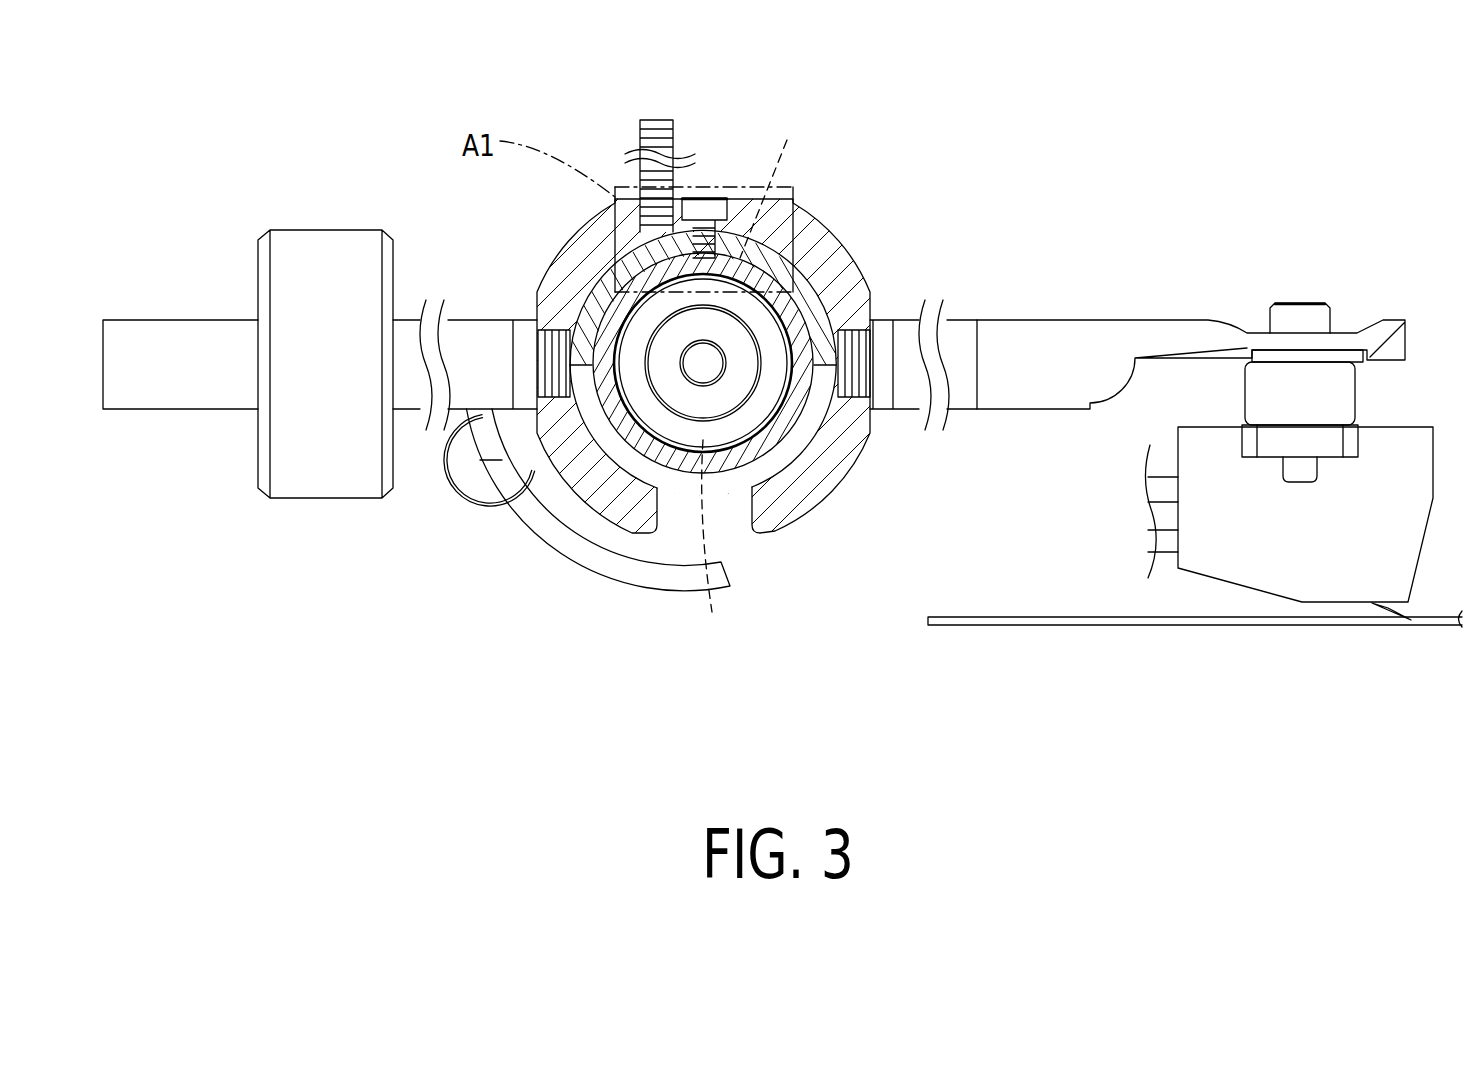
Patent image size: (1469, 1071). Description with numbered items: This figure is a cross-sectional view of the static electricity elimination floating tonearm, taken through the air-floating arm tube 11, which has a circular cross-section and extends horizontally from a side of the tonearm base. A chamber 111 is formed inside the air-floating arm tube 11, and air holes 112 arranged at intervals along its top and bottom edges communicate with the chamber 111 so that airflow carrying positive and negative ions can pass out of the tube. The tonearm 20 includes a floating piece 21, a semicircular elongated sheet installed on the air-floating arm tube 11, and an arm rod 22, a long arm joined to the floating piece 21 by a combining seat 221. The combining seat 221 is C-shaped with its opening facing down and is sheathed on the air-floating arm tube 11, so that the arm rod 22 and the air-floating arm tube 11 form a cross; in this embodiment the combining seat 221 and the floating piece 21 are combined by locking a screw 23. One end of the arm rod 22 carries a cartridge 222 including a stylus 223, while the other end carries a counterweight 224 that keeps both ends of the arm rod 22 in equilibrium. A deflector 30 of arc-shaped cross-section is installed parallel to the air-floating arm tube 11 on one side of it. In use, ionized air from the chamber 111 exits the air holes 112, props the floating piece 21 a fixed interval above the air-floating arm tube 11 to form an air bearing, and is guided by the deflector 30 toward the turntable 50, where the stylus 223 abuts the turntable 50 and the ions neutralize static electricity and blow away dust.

The air-floating arm tube 11 is at (775, 433).
The chamber 111 is at (648, 408).
The air holes 112 is at (707, 650).
The tonearm 20 is at (1151, 468).
The floating piece 21 is at (598, 305).
The arm rod 22 is at (1027, 343).
The combining seat 221 is at (820, 240).
The cartridge 222 is at (1262, 540).
The stylus 223 is at (1388, 618).
The counterweight 224 is at (340, 490).
The screw 23 is at (706, 200).
The deflector 30 is at (572, 561).
The turntable 50 is at (1030, 617).